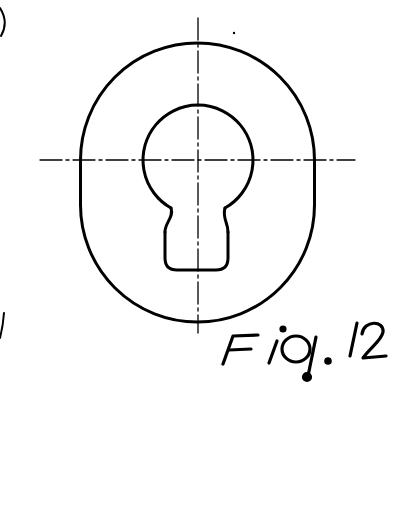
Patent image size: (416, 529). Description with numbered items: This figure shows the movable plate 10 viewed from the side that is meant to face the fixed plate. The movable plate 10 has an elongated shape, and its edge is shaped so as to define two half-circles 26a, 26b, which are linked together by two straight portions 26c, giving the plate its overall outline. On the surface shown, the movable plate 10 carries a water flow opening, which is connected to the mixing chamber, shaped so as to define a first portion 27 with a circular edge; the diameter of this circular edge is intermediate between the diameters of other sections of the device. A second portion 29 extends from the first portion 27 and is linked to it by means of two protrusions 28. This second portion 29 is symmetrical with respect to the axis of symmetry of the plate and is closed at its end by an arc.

The movable plate 10 is at (211, 161).
The half-circle 26a is at (128, 66).
The half-circle 26b is at (286, 275).
The straight portions 26c is at (315, 202).
The first portion 27 is at (172, 134).
The protrusions 28 is at (172, 213).
The second portion 29 is at (175, 250).